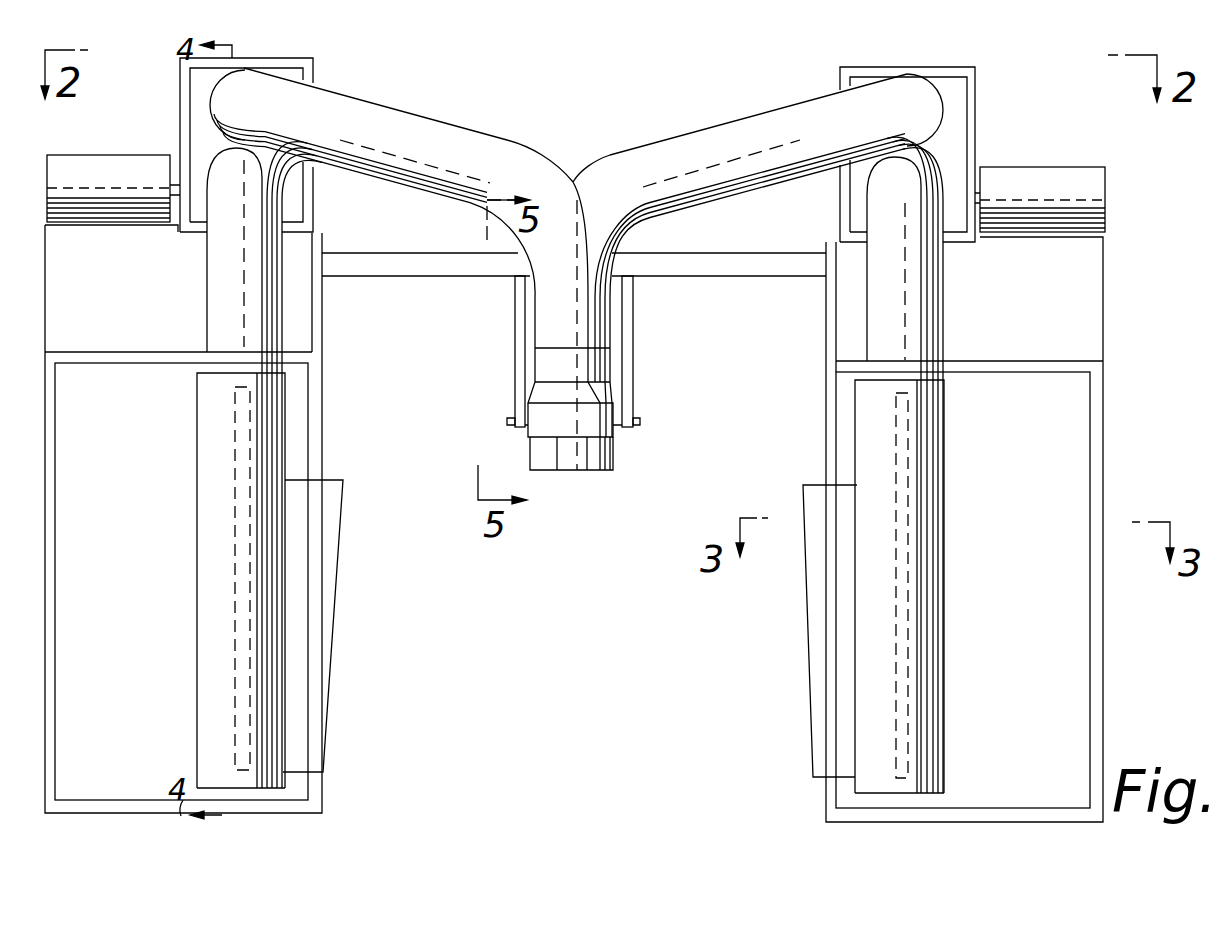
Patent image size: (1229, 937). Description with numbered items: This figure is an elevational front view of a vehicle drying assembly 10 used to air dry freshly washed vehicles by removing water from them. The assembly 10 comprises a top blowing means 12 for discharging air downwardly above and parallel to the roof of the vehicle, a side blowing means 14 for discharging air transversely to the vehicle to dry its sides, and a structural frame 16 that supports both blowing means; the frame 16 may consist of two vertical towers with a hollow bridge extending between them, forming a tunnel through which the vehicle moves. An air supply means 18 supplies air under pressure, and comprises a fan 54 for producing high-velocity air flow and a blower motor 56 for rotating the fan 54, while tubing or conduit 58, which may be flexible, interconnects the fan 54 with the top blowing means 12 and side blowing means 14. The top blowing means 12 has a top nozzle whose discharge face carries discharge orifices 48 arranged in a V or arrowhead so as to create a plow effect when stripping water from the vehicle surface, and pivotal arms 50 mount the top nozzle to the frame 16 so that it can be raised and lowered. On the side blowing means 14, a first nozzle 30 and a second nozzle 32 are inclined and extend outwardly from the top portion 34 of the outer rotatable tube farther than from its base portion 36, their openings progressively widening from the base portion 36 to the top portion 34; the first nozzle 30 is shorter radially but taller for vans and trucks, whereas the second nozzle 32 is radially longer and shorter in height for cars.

The vehicle drying assembly 10 is at (568, 114).
The top blowing means 12 is at (623, 447).
The side blowing means 14 is at (184, 677).
The frame 16 is at (735, 267).
The air supply means 18 is at (166, 149).
The first nozzle 30 is at (243, 608).
The second nozzle 32 is at (338, 670).
The top portion 34 is at (208, 393).
The base portion 36 is at (203, 770).
The discharge orifice 48 is at (570, 472).
The pivotal arms 50 is at (518, 345).
The fan 54 is at (180, 92).
The blower motor 56 is at (98, 170).
The conduit 58 is at (445, 137).